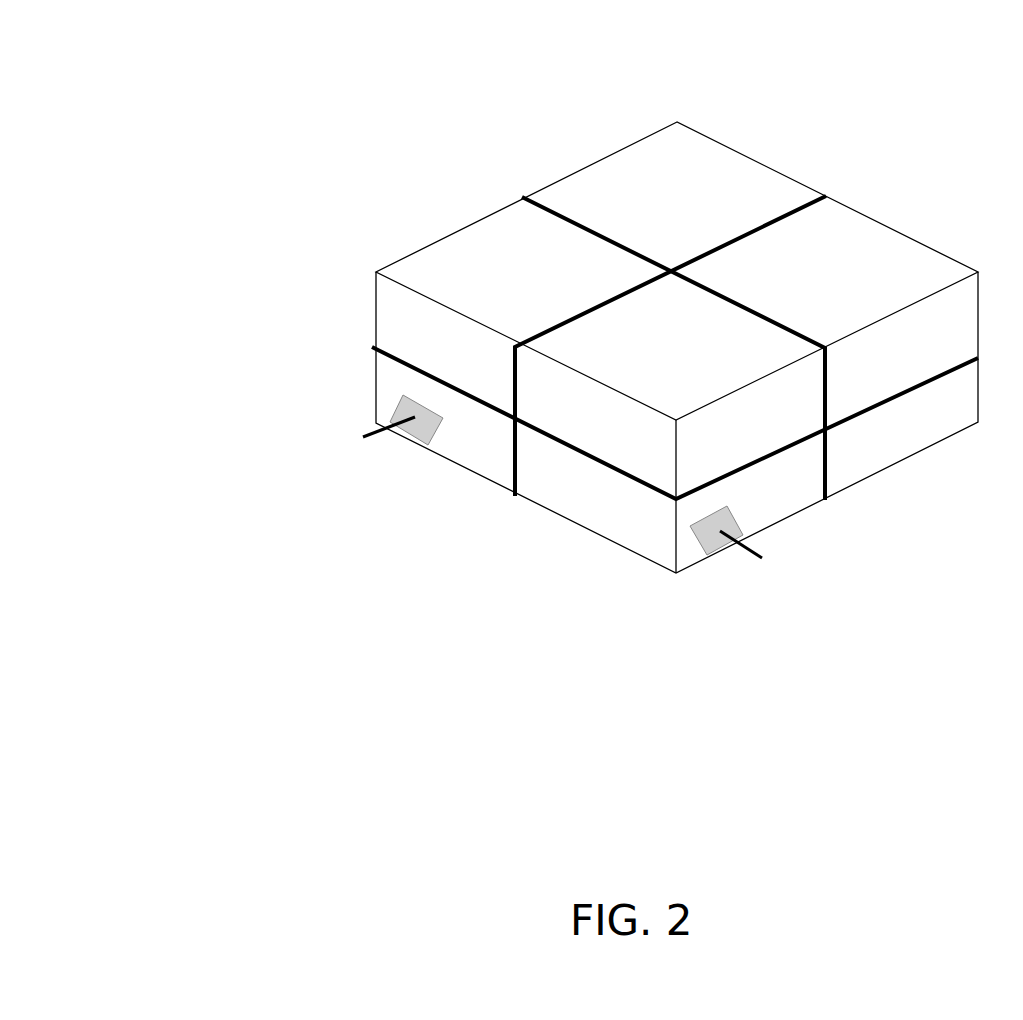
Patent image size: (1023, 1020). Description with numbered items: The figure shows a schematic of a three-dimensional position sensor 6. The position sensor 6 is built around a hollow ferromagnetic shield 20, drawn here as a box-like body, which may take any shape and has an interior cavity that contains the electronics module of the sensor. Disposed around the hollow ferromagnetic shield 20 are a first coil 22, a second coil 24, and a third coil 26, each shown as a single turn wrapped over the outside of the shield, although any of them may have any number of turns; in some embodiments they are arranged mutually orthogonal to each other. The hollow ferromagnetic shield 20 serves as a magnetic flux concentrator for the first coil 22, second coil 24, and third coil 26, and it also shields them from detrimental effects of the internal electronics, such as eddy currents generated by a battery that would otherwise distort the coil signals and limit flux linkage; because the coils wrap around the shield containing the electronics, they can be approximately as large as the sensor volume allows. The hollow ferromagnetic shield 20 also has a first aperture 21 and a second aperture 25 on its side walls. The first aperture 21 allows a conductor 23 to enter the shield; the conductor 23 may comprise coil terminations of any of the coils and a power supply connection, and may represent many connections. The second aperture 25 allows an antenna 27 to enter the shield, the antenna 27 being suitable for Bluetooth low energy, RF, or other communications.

The position sensor 6 is at (230, 140).
The hollow ferromagnetic shield 20 is at (748, 156).
The first coil 22 is at (603, 232).
The second coil 24 is at (562, 317).
The third coil 26 is at (942, 372).
The first aperture 21 is at (440, 436).
The conductor 23 is at (383, 440).
The second aperture 25 is at (695, 544).
The antenna 27 is at (752, 562).